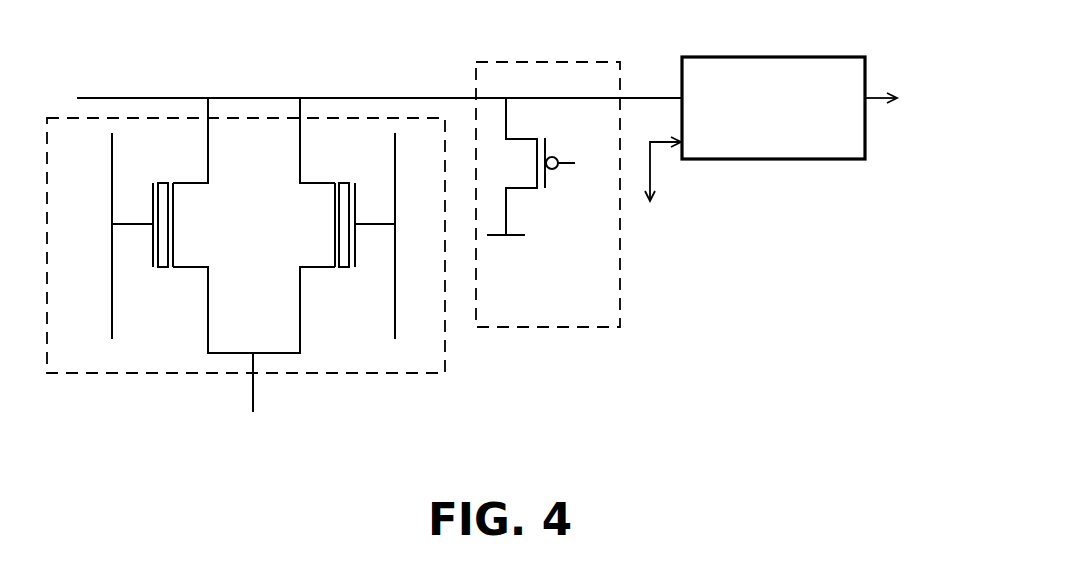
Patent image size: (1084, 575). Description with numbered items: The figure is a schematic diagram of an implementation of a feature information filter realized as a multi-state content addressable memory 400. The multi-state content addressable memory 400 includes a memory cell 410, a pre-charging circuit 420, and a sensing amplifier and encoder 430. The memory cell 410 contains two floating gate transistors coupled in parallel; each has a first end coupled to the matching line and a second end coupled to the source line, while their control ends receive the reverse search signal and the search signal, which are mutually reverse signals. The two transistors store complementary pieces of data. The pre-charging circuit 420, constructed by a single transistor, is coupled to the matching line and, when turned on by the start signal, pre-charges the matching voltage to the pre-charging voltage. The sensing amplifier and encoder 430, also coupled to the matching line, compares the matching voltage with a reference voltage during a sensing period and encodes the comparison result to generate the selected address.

The multi-state content addressable memory 400 is at (912, 454).
The memory cell 410 is at (420, 376).
The pre-charging circuit 420 is at (548, 60).
The sensing amplifier and encoder 430 is at (775, 56).